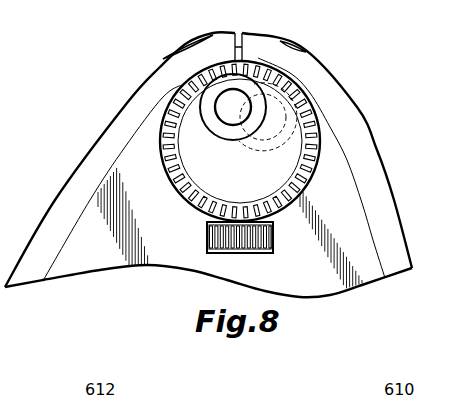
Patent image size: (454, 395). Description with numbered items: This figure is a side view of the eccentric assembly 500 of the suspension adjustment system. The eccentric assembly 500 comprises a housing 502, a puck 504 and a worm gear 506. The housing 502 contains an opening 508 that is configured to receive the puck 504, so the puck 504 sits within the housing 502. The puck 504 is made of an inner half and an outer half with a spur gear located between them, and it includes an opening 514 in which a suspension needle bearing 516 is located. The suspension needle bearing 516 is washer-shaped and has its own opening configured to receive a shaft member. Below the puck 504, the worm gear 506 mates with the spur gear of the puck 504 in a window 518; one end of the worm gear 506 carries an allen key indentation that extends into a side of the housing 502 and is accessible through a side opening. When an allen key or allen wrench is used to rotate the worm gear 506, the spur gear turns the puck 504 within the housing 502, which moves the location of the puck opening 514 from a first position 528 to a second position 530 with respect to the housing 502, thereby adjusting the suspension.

The eccentric assembly 500 is at (121, 78).
The housing 502 is at (125, 104).
The puck 504 is at (294, 153).
The worm gear 506 is at (205, 235).
The opening 508 is at (303, 55).
The opening 514 is at (222, 108).
The suspension needle bearing 516 is at (222, 64).
The window 518 is at (248, 253).
The first position 528 is at (260, 63).
The second position 530 is at (300, 93).